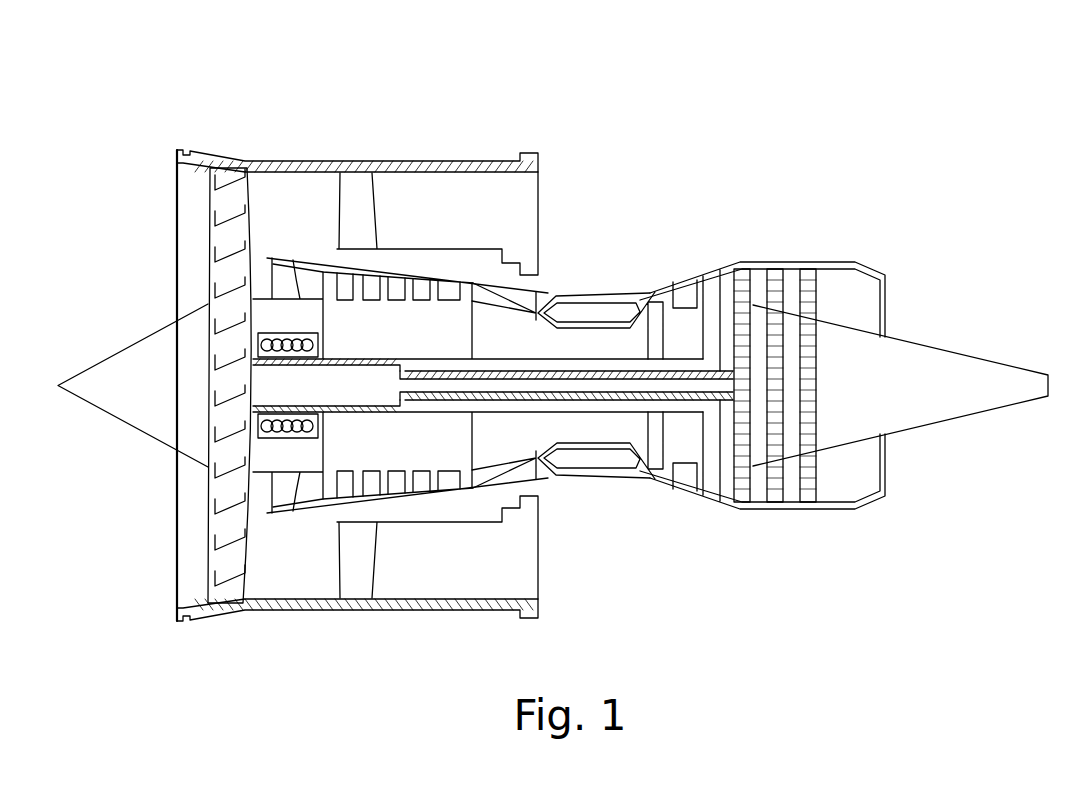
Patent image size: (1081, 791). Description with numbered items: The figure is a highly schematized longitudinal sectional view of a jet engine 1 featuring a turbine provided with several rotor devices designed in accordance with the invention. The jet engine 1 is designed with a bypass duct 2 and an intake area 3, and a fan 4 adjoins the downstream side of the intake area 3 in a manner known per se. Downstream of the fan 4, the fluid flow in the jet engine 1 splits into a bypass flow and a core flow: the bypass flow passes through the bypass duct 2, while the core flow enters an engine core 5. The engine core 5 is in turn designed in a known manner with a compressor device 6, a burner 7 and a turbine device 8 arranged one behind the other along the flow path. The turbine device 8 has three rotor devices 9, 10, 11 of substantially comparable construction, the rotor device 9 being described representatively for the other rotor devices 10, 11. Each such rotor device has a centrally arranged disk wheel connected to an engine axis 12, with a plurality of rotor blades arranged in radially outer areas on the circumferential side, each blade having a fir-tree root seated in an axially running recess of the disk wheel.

The jet engine 1 is at (396, 130).
The bypass duct 2 is at (477, 195).
The intake area 3 is at (193, 258).
The fan 4 is at (228, 205).
The engine core 5 is at (312, 490).
The compressor device 6 is at (397, 508).
The burner 7 is at (633, 483).
The turbine device 8 is at (740, 513).
The rotor device 9 is at (740, 270).
The rotor device 10 is at (777, 270).
The rotor device 11 is at (808, 270).
The engine axis 12 is at (568, 382).